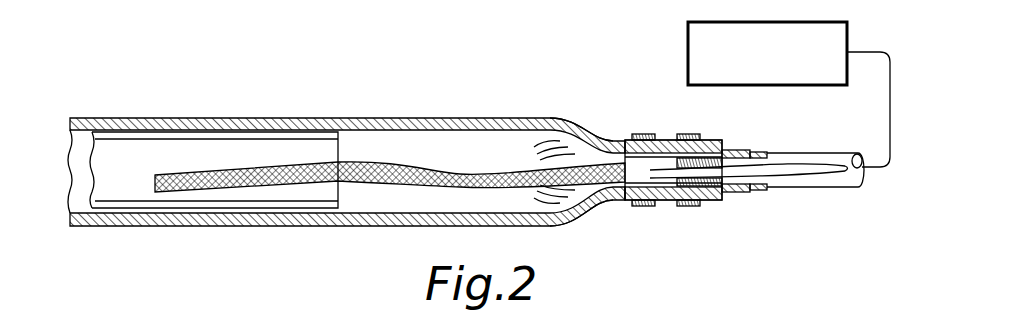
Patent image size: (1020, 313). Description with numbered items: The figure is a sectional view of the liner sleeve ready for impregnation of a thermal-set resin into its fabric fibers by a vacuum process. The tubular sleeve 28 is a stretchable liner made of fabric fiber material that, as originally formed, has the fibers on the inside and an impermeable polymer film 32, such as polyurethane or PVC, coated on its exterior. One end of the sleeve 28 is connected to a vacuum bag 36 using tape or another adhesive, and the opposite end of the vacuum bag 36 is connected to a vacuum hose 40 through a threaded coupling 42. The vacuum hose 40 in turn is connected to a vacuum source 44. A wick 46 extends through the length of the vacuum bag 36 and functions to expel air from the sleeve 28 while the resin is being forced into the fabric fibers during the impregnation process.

The tubular sleeve 28 is at (112, 203).
The impermeable polymer film 32 is at (314, 134).
The vacuum bag 36 is at (567, 123).
The vacuum hose 40 is at (890, 120).
The threaded coupling 42 is at (669, 141).
The vacuum source 44 is at (697, 55).
The wick 46 is at (452, 177).